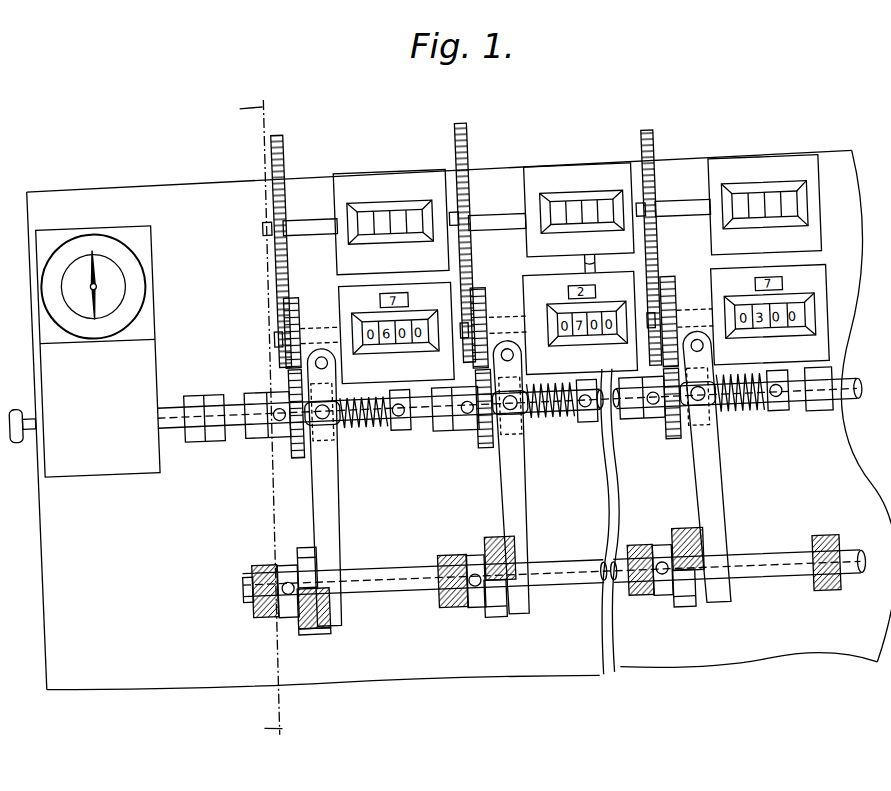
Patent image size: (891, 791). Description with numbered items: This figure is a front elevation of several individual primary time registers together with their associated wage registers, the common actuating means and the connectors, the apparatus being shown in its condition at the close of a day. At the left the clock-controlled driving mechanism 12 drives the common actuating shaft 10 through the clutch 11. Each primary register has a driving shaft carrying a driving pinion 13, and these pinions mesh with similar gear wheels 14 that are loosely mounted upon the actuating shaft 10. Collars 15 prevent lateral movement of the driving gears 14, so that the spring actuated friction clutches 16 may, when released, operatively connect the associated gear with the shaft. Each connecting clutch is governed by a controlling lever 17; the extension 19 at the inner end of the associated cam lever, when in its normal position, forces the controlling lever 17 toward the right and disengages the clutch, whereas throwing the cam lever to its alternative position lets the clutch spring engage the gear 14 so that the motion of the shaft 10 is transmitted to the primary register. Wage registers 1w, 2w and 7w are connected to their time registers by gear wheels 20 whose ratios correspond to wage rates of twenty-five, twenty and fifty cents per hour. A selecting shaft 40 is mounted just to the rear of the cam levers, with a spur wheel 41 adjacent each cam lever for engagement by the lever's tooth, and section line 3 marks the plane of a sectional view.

The section line 3- 3 is at (264, 421).
The common actuating shaft 10 is at (402, 428).
The clutch 11 is at (200, 392).
The clock-controlled driving mechanism 12 is at (155, 352).
The driving pinion 13 is at (300, 303).
The gear wheel 14 is at (294, 452).
The collar 15 is at (252, 431).
The spring actuated friction clutch 16 is at (312, 440).
The controlling lever 17 is at (333, 502).
The extension 19 is at (322, 622).
The gear wheel 20 is at (293, 144).
The selecting shaft 40 is at (590, 590).
The spur wheel 41 is at (300, 542).
The wage register 1w is at (385, 176).
The wage register 2w is at (578, 172).
The wage register 7w is at (760, 172).